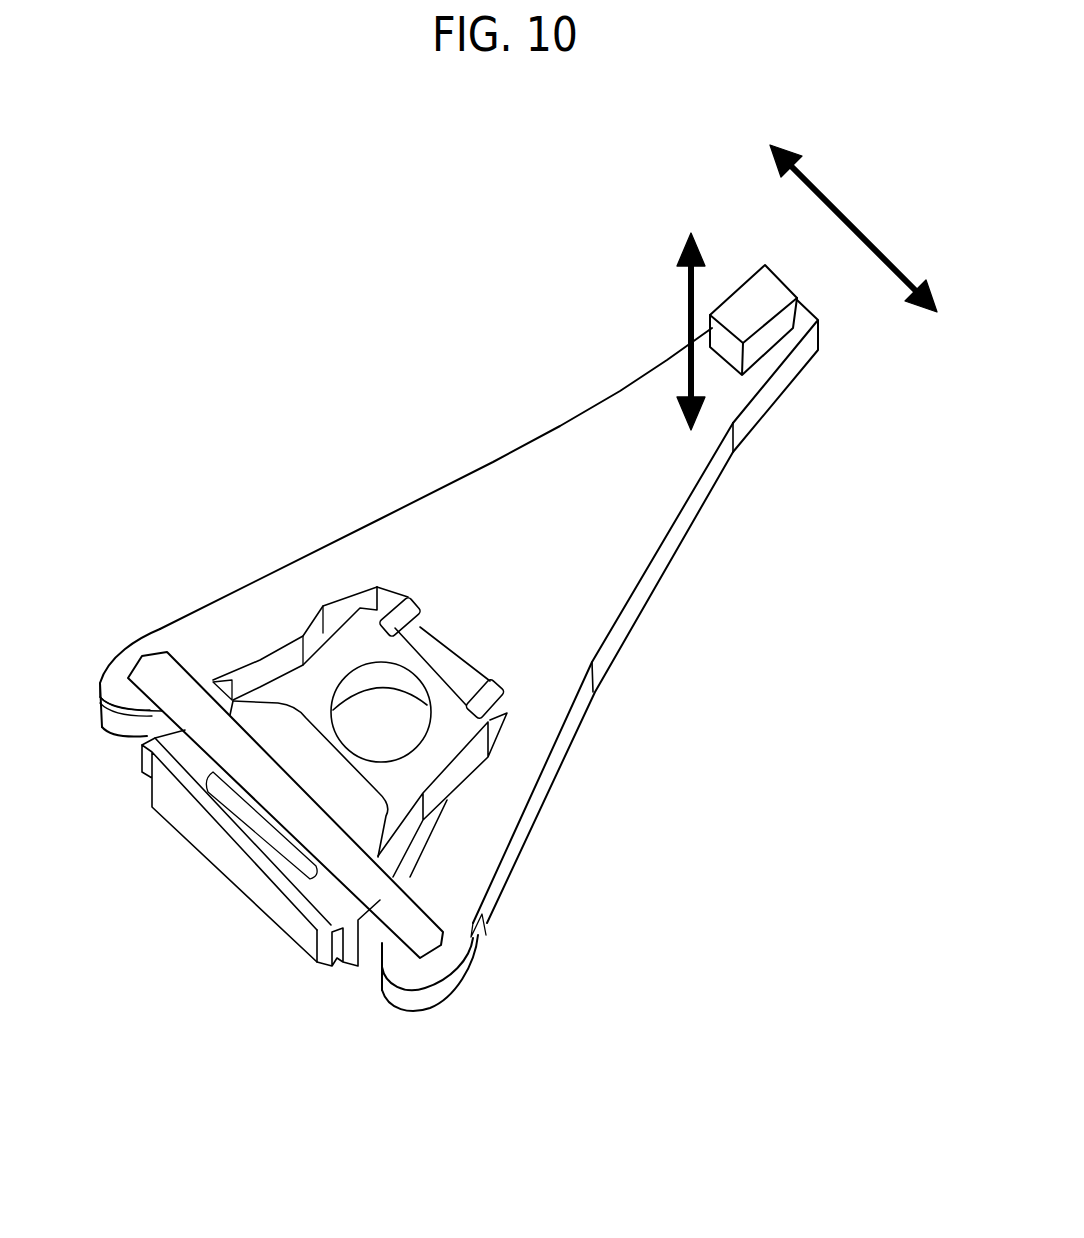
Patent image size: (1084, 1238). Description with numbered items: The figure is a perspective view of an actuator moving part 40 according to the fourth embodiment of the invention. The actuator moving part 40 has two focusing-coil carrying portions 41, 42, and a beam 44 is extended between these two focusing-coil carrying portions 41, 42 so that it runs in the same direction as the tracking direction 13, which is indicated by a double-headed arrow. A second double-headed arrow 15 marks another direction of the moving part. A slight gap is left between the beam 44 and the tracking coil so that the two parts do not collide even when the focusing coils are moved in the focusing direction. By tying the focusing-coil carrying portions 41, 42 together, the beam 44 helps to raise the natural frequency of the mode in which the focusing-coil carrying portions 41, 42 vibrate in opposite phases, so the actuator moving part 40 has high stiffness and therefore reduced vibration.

The actuator moving part 40 is at (459, 615).
The focusing-coil carrying portion 41 is at (115, 727).
The focusing-coil carrying portion 42 is at (400, 963).
The beam 44 is at (287, 803).
The tracking direction 13 is at (853, 228).
The direction of movement 15 is at (665, 331).